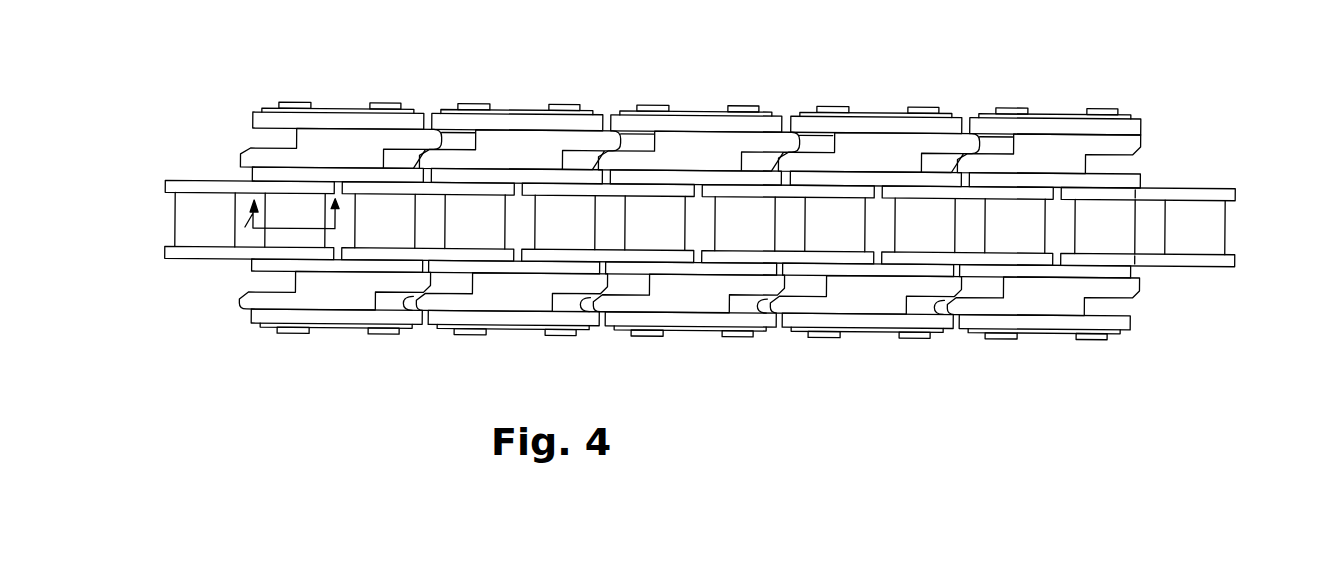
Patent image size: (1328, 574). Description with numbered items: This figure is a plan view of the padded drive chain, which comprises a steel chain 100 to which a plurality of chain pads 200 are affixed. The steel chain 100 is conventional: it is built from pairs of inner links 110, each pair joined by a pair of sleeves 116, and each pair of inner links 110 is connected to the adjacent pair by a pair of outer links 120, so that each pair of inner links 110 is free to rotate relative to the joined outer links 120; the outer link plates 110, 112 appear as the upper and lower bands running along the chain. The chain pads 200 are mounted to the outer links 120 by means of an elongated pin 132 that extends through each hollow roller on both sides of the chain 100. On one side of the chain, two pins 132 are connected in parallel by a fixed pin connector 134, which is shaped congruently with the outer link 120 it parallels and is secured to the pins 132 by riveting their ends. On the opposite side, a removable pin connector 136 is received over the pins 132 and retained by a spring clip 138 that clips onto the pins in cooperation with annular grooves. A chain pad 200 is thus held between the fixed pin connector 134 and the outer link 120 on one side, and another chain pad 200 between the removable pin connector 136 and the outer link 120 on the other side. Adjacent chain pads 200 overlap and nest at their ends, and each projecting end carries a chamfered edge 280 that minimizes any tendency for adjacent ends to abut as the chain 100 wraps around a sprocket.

The steel chain 100 is at (152, 172).
The inner links 110 is at (1226, 191).
The lower outer link plate 112 is at (1228, 265).
The sleeves 116 is at (1212, 238).
The outer links 120 is at (1135, 187).
The elongated pin 132 is at (840, 103).
The fixed pin connector 134 is at (718, 335).
The removable pin connector 136 is at (863, 128).
The spring clip 138 is at (946, 111).
The chain pad 200 is at (1130, 148).
The chamfered edge 280 is at (945, 318).